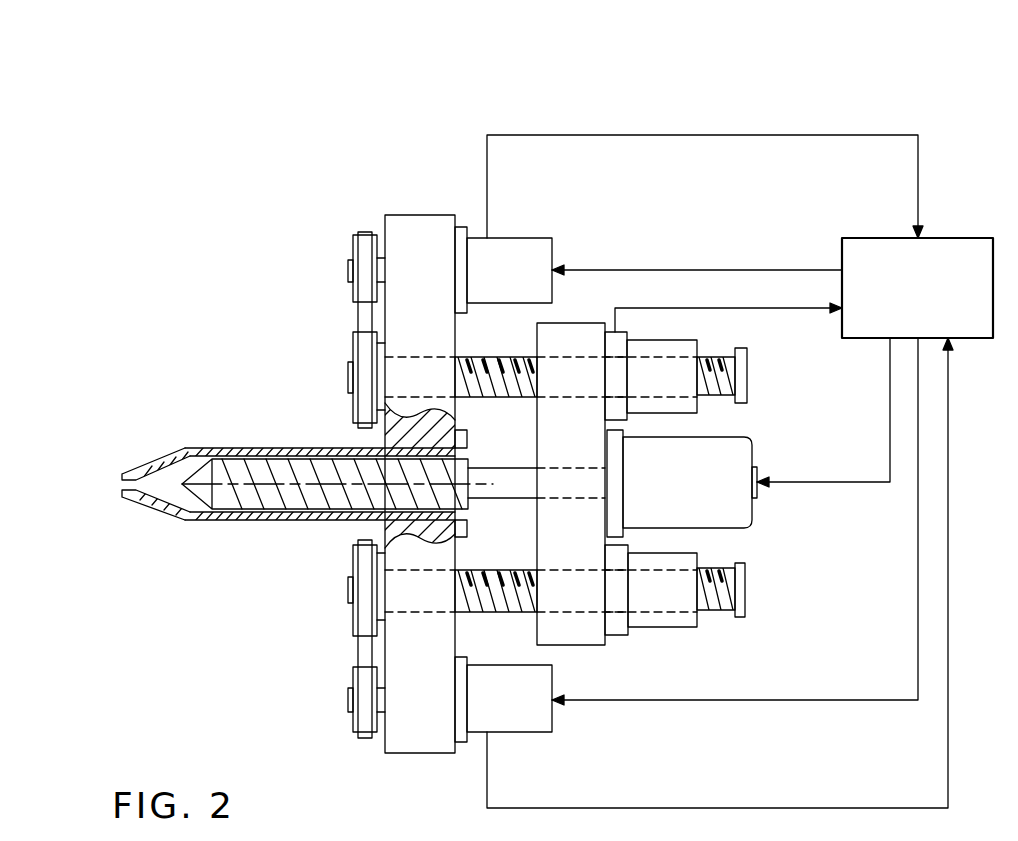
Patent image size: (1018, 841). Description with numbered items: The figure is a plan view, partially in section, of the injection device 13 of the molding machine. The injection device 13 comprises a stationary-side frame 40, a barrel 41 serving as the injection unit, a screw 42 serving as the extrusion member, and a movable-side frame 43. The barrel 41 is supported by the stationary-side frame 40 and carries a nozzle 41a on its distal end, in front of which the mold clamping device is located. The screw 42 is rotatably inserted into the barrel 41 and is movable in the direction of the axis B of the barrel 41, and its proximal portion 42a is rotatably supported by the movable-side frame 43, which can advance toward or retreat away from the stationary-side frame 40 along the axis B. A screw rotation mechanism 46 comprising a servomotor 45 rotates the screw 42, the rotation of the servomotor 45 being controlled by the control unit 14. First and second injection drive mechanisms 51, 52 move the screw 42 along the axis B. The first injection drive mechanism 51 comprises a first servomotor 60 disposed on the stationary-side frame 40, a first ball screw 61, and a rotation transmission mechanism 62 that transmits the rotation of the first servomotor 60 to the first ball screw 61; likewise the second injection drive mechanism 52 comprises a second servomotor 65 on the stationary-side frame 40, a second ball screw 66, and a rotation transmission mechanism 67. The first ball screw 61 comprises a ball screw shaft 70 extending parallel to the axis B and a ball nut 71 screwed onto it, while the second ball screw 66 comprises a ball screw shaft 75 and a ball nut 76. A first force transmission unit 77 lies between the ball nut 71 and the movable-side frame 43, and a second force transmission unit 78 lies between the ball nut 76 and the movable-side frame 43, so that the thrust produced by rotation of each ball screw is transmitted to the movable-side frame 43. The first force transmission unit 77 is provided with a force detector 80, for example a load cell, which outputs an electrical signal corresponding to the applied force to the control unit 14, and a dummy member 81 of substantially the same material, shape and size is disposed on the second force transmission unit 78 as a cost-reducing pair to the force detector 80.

The injection device 13 is at (687, 100).
The control unit 14 is at (960, 238).
The stationary-side frame 40 is at (418, 215).
The barrel 41 is at (219, 448).
The nozzle 41a is at (113, 477).
The screw 42 is at (280, 468).
The proximal portion 42a is at (565, 468).
The movable-side frame 43 is at (573, 330).
The servomotor 45 is at (752, 440).
The screw rotation mechanism 46 is at (770, 520).
The first injection drive mechanism 51 is at (576, 234).
The second injection drive mechanism 52 is at (579, 731).
The first servomotor 60 is at (510, 237).
The first ball screw 61 is at (718, 387).
The rotation transmission mechanism 62 is at (358, 315).
The second servomotor 65 is at (520, 734).
The second ball screw 66 is at (718, 597).
The rotation transmission mechanism 67 is at (358, 650).
The ball screw shaft 70 is at (497, 357).
The ball nut 71 is at (690, 338).
The ball screw shaft 75 is at (492, 612).
The ball nut 76 is at (670, 627).
The first force transmission unit 77 is at (609, 340).
The second force transmission unit 78 is at (608, 620).
The force detector 80 is at (622, 375).
The dummy member 81 is at (622, 590).
The axis B is at (335, 478).